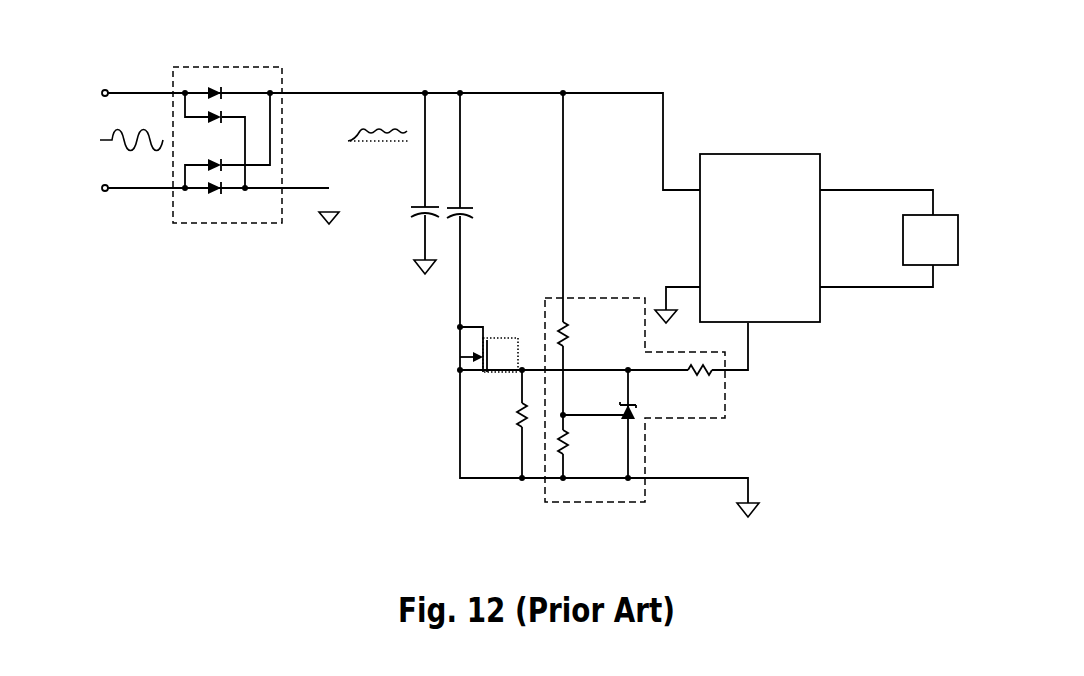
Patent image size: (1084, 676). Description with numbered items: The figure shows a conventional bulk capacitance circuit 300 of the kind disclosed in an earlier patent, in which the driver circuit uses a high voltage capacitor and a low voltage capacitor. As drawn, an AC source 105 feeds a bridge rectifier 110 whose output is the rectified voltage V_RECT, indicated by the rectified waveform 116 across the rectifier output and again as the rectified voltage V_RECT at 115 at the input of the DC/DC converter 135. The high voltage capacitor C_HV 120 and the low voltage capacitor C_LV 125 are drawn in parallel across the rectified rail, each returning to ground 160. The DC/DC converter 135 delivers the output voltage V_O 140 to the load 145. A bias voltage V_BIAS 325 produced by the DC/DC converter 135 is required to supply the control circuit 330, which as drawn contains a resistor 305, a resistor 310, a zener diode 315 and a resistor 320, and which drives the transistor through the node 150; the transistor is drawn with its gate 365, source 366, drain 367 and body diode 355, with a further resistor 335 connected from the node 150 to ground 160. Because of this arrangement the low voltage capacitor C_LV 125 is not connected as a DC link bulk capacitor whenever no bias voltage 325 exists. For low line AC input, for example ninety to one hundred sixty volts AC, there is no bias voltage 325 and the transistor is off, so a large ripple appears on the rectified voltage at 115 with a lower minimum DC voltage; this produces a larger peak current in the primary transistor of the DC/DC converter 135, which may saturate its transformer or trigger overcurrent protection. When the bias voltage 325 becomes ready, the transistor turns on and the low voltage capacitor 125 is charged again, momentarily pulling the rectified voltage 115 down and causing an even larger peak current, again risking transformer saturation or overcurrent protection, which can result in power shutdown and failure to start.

The AC power source 105 is at (86, 126).
The bridge rectifier 110 is at (173, 71).
The rectified voltage V_RECT 115 is at (662, 225).
The rectified voltage waveform 116 is at (330, 136).
The high-voltage capacitor CHV 120 is at (421, 204).
The low-voltage capacitor CLV 125 is at (470, 201).
The DC-to-DC converter 135 is at (748, 279).
The output voltage VO 140 is at (852, 226).
The load 145 is at (919, 260).
The node 150 is at (536, 364).
The ground 160 is at (413, 277).
The power supply circuit 300 is at (221, 339).
The resistor 305 is at (572, 341).
The resistor 310 is at (575, 451).
The zener diode 315 is at (624, 411).
The resistor 320 is at (705, 379).
The bias voltage VBIAS 325 is at (750, 416).
The bias circuit 330 is at (583, 505).
The resistor 335 is at (516, 422).
The body diode of transistor Q1 355 is at (459, 353).
The gate of transistor Q1 365 is at (503, 336).
The source of transistor Q1 366 is at (462, 379).
The drain of transistor Q1 367 is at (504, 376).